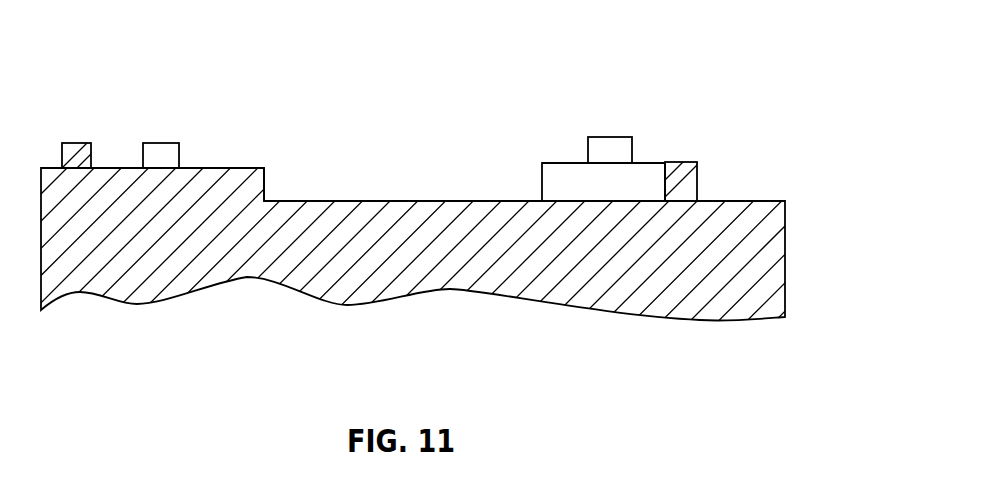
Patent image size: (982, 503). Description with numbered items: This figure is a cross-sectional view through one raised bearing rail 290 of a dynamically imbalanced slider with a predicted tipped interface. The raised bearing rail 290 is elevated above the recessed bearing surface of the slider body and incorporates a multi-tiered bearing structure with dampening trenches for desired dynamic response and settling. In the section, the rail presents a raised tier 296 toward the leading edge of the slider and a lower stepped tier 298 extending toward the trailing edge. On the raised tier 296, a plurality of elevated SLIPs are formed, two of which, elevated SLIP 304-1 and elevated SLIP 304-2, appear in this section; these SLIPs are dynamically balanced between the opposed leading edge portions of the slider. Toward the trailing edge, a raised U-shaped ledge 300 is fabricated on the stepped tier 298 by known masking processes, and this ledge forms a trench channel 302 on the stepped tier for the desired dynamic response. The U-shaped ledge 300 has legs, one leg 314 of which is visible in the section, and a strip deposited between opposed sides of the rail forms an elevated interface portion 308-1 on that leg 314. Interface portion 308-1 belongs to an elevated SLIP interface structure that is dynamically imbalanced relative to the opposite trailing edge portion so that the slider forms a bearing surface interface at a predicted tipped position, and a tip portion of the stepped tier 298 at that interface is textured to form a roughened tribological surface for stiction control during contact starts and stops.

The raised bearing rail 290 is at (775, 173).
The raised tier 296 is at (242, 167).
The stepped tier 298 is at (326, 202).
The U-shaped ledge 300 is at (685, 162).
The trench channel 302 is at (635, 182).
The elevated SLIP 304-1 is at (158, 143).
The elevated SLIP 304-2 is at (77, 143).
The interface portion 308-1 is at (615, 137).
The leg of U-shaped ledge 314 is at (565, 178).